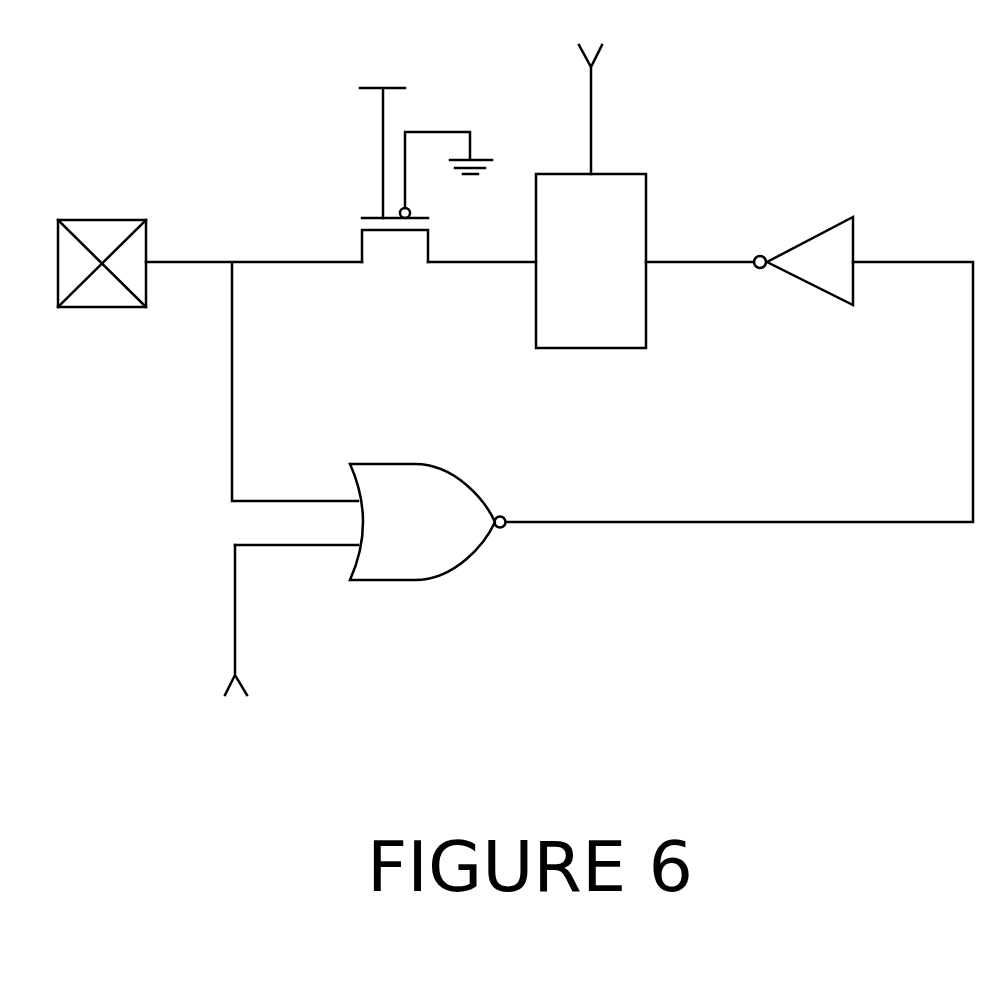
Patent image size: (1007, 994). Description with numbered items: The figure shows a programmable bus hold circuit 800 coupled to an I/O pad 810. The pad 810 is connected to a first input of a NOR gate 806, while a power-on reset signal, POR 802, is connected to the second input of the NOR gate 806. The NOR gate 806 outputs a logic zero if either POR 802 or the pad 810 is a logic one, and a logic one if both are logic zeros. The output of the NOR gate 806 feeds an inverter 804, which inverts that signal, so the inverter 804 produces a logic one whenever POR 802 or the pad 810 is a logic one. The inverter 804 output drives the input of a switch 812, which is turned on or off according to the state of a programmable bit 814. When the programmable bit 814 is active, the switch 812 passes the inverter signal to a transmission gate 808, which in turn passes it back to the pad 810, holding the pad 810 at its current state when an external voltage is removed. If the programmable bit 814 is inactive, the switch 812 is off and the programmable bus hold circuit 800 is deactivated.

The programmable bus hold circuit 800 is at (518, 392).
The POR 802 is at (236, 661).
The inverter 804 is at (803, 261).
The NOR gate 806 is at (428, 522).
The transmission gate 808 is at (426, 185).
The pad 810 is at (68, 307).
The switch 812 is at (591, 261).
The programmable bit 814 is at (620, 90).